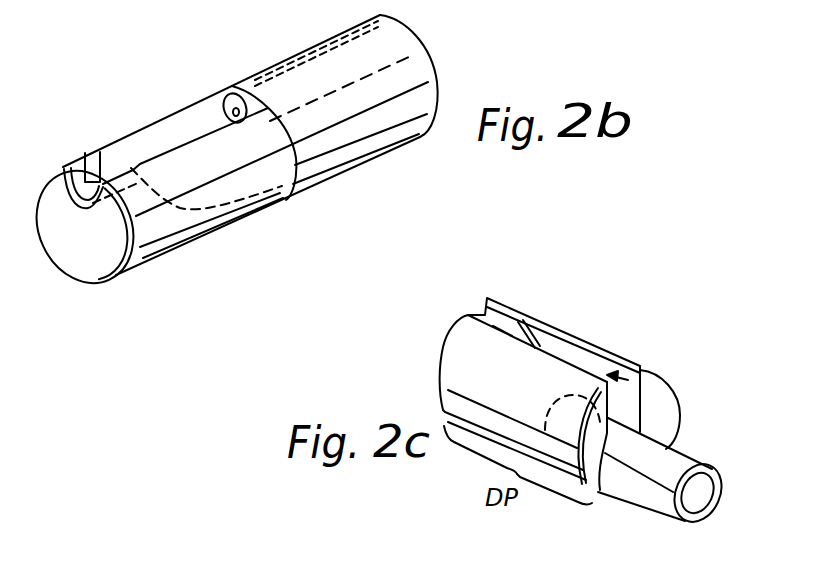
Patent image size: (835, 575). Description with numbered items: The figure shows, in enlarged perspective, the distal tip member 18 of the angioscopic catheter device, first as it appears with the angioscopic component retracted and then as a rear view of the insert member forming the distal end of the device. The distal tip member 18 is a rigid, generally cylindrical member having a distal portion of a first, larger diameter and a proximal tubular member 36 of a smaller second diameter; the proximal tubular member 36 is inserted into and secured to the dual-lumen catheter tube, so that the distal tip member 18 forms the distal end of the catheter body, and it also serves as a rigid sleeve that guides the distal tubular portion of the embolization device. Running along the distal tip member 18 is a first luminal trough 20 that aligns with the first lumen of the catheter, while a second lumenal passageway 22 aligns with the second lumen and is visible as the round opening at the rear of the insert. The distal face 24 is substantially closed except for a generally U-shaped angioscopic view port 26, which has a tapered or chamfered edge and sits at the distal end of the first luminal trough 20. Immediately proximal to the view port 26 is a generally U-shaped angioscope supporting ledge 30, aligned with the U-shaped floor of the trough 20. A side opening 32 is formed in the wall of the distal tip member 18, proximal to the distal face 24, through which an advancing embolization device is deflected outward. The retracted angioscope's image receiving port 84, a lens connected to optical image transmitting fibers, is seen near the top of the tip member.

In FIG. 2B, the distal tip member 18 is at (177, 228).
In FIG. 2C, the distal tip member 18 is at (593, 343).
In FIG. 2C, the first luminal trough 20 is at (677, 401).
In FIG. 2C, the second lumenal passageway 22 is at (692, 484).
In FIG. 2B, the distal face 24 is at (90, 228).
In FIG. 2B, the angioscopic view port 26 is at (62, 180).
In FIG. 2B, the angioscope supporting ledge 30 is at (88, 177).
In FIG. 2B, the side opening 32 is at (190, 130).
In FIG. 2C, the side opening 32 is at (545, 350).
In FIG. 2C, the proximal tubular member 36 is at (658, 478).
In FIG. 2B, the image receiving port 84 is at (225, 87).